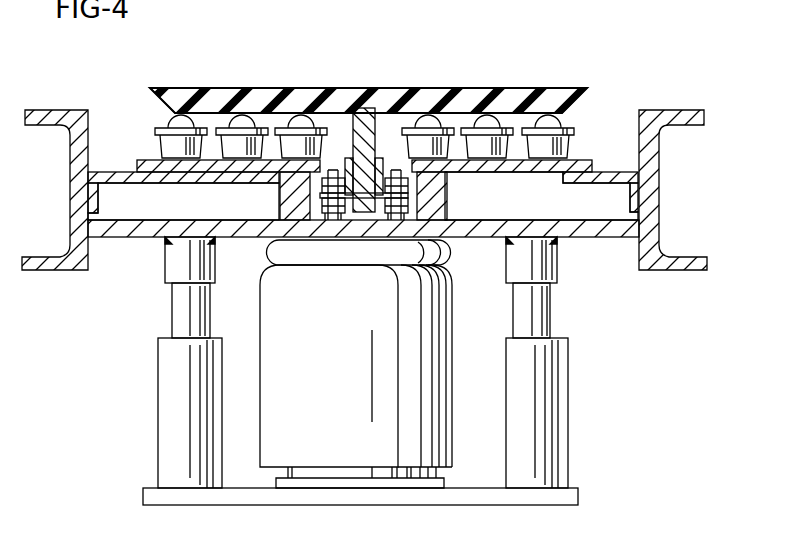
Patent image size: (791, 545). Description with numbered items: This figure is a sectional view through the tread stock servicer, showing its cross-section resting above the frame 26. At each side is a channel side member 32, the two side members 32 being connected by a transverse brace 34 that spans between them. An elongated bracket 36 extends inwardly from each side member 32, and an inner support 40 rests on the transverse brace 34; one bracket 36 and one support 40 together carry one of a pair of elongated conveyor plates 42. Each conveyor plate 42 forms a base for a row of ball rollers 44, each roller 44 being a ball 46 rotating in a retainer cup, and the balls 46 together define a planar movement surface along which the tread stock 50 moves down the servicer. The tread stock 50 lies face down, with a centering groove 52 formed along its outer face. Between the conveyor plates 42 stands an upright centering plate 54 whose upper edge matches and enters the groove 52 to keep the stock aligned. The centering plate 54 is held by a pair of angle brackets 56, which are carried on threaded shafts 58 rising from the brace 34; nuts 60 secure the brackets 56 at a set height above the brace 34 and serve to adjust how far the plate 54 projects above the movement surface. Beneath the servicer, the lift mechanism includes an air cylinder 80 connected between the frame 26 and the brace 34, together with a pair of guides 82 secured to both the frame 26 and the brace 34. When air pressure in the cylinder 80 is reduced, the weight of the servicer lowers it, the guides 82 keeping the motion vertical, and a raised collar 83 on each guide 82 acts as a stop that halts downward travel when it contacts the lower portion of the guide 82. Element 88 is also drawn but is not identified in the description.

The frame 26 is at (150, 488).
The channel side member 32 is at (72, 182).
The transverse brace 34 is at (118, 238).
The elongated bracket 36 is at (115, 172).
The inner support 40 is at (447, 200).
The conveyor plate 42 is at (150, 160).
The ball roller 44 is at (567, 112).
The ball 46 is at (496, 117).
The tread stock 50 is at (303, 88).
The groove 52 is at (370, 106).
The centering plate 54 is at (378, 136).
The angle bracket 56 is at (312, 183).
The threaded shaft 58 is at (388, 214).
The nut 60 is at (284, 184).
The air cylinder 80 is at (365, 402).
The guide 82 is at (158, 390).
The raised collar 83 is at (508, 284).
The post 88 is at (162, 284).